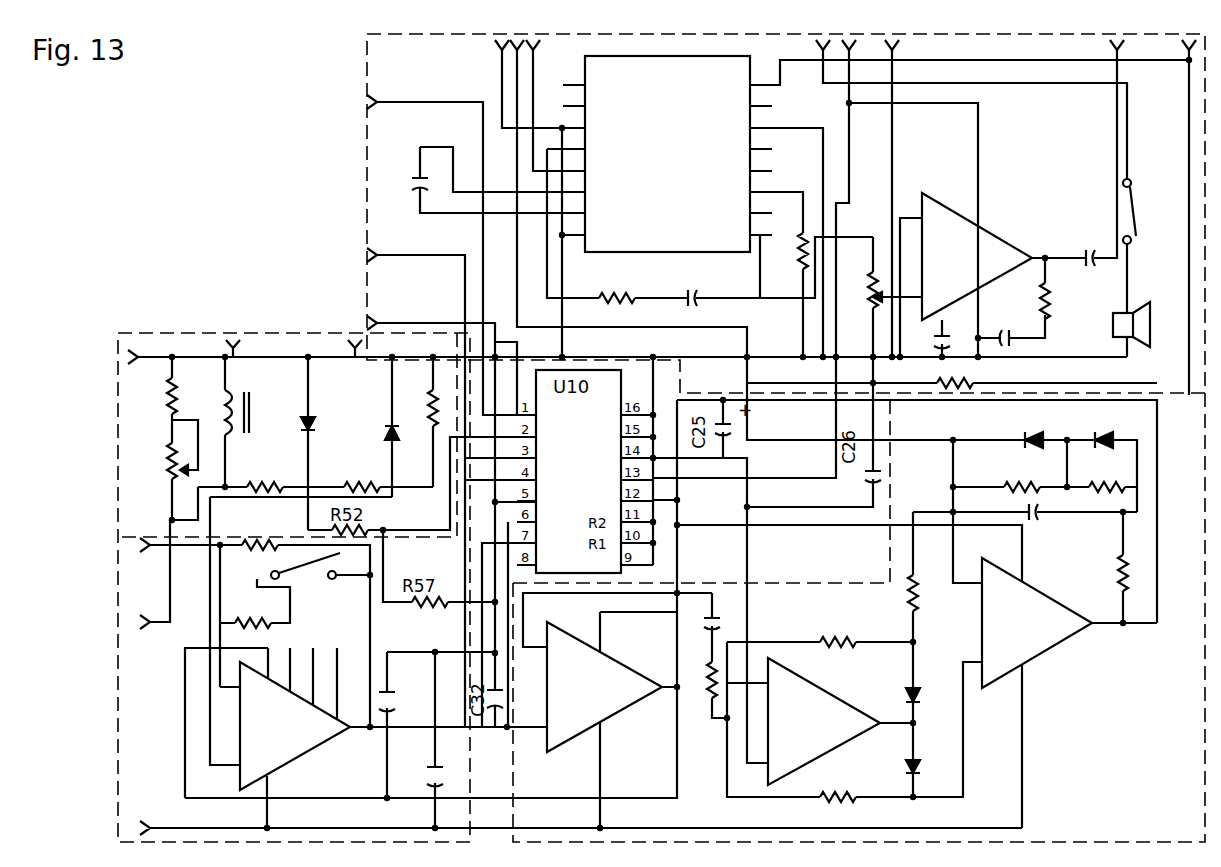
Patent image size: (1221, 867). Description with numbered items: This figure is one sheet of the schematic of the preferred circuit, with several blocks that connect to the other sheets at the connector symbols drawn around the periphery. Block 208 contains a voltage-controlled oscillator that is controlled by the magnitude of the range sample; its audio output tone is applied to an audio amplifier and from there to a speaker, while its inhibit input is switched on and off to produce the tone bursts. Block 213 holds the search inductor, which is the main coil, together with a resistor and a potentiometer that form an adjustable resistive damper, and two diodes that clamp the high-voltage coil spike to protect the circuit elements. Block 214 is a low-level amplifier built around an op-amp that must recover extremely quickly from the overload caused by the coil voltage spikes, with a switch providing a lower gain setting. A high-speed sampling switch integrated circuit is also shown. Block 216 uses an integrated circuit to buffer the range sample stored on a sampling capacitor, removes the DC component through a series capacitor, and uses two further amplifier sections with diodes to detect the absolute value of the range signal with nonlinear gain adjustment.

The block 208 is at (366, 147).
The block 213 is at (215, 333).
The block 214 is at (118, 605).
The block 216 is at (1205, 723).